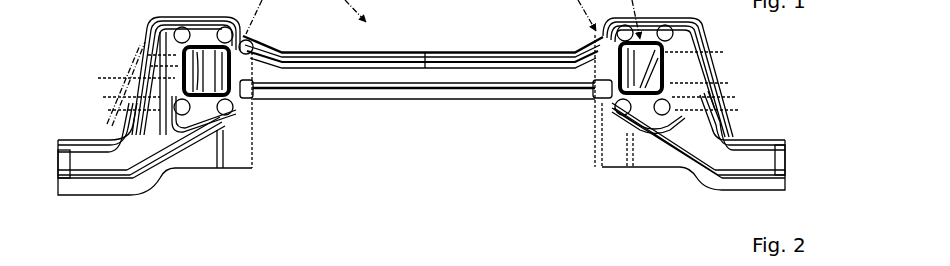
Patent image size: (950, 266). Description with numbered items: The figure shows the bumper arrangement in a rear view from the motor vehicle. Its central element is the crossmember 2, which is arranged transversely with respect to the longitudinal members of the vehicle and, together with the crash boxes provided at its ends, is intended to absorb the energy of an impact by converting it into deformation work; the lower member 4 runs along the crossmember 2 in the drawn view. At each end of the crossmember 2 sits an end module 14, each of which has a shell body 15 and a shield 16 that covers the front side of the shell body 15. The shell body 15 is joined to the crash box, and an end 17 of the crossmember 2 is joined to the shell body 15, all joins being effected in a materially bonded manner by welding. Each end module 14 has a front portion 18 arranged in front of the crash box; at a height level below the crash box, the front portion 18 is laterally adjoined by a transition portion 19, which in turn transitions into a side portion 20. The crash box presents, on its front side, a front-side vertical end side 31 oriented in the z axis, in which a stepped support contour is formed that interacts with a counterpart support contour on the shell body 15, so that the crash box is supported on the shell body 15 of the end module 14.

The crossmember 2 is at (455, 102).
The lower beam member 4 is at (518, 101).
The end module 14 is at (657, 178).
The shell body 15 is at (107, 125).
The shield 16 is at (137, 40).
The end of the crossmember 17 is at (258, 104).
The front portion 18 is at (714, 68).
The transition portion 19 is at (178, 156).
The side portion 20 is at (82, 188).
The front-side vertical end side 31 is at (178, 70).